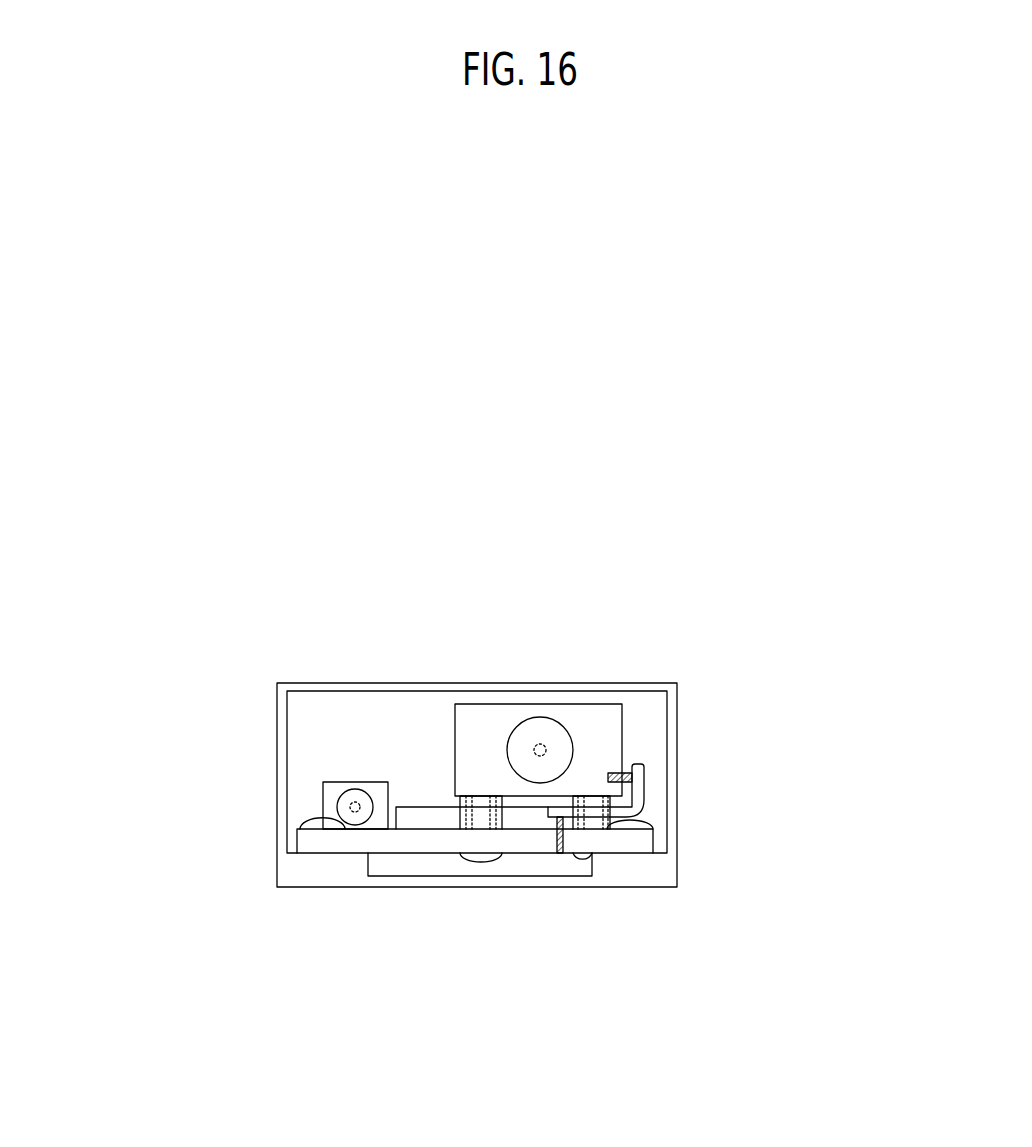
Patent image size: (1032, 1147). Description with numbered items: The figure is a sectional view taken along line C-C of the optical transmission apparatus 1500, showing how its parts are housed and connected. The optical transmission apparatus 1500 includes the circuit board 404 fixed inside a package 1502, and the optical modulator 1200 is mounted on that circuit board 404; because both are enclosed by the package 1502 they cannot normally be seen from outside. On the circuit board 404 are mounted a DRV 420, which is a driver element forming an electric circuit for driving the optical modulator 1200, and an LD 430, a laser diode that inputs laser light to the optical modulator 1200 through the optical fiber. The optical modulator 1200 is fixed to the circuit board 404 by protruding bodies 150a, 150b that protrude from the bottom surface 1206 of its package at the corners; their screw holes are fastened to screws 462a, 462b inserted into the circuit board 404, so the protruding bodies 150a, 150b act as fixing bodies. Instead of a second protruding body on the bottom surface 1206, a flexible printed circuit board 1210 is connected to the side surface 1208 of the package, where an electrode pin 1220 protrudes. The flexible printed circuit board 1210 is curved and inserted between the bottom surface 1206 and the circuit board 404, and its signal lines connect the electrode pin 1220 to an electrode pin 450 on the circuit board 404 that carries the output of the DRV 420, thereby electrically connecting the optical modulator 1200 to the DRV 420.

The optical transmission apparatus 1500 is at (213, 474).
The optical modulator 1200 is at (615, 727).
The side surface 1208 is at (592, 772).
The package 1502 is at (538, 698).
The DRV (driver) 420 is at (472, 705).
The LD (laser diode) 430 is at (325, 792).
The circuit board 404 is at (335, 838).
The bottom surface 1206 is at (480, 937).
The protruding body 150a is at (463, 812).
The protruding body 150b is at (597, 822).
The screw 462a is at (486, 912).
The screw 462b is at (615, 923).
The electrode pin 450 is at (565, 908).
The electrode pin 1220 is at (689, 779).
The flexible printed circuit board 1210 is at (645, 805).